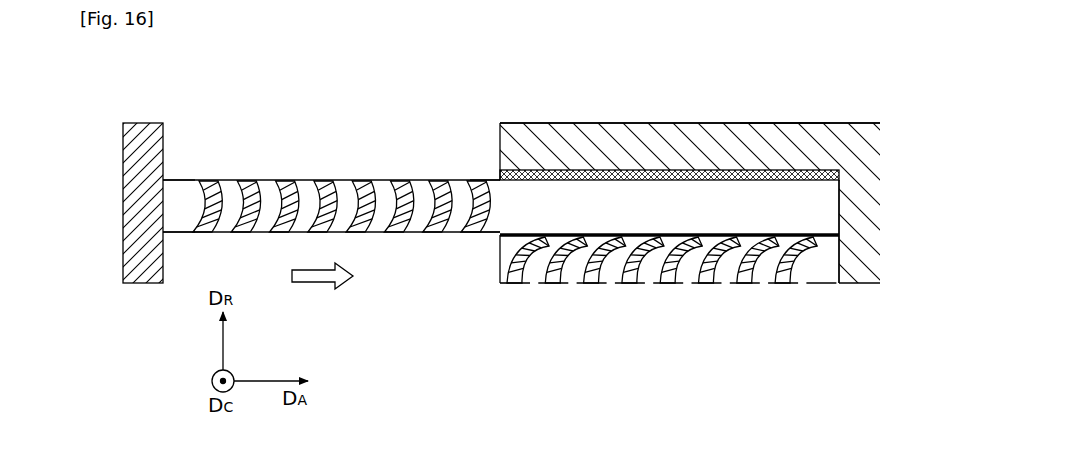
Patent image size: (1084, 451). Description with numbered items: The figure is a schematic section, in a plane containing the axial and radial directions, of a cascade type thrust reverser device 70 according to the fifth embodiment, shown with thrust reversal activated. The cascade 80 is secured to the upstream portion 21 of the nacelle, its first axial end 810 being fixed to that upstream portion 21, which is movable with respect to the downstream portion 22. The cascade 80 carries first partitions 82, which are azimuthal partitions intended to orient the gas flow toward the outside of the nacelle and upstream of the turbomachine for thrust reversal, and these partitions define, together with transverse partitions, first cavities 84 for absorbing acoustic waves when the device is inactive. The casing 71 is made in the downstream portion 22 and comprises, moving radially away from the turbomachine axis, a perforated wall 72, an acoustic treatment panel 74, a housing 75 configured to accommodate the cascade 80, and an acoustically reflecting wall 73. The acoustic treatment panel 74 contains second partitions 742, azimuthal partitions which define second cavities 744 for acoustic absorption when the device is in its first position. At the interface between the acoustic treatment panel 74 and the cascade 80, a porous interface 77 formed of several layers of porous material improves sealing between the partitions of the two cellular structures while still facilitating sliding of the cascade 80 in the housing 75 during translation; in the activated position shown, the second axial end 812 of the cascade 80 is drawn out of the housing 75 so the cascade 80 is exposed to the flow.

The upstream portion of the nacelle 21 is at (135, 158).
The cascade 80 is at (295, 176).
The first axial end 810 is at (170, 176).
The second axial end 812 is at (496, 177).
The first partitions 82 is at (207, 181).
The first cavities 84 is at (378, 209).
The thrust reverser device 70 is at (496, 124).
The downstream portion of the nacelle 22 is at (862, 134).
The casing 71 is at (778, 171).
The acoustically reflecting wall 73 is at (840, 174).
The housing 75 is at (783, 206).
The porous interface 77 is at (833, 232).
The acoustic treatment panel 74 is at (822, 261).
The perforated wall 72 is at (825, 290).
The second partitions 742 is at (548, 286).
The second cavities 744 is at (648, 262).